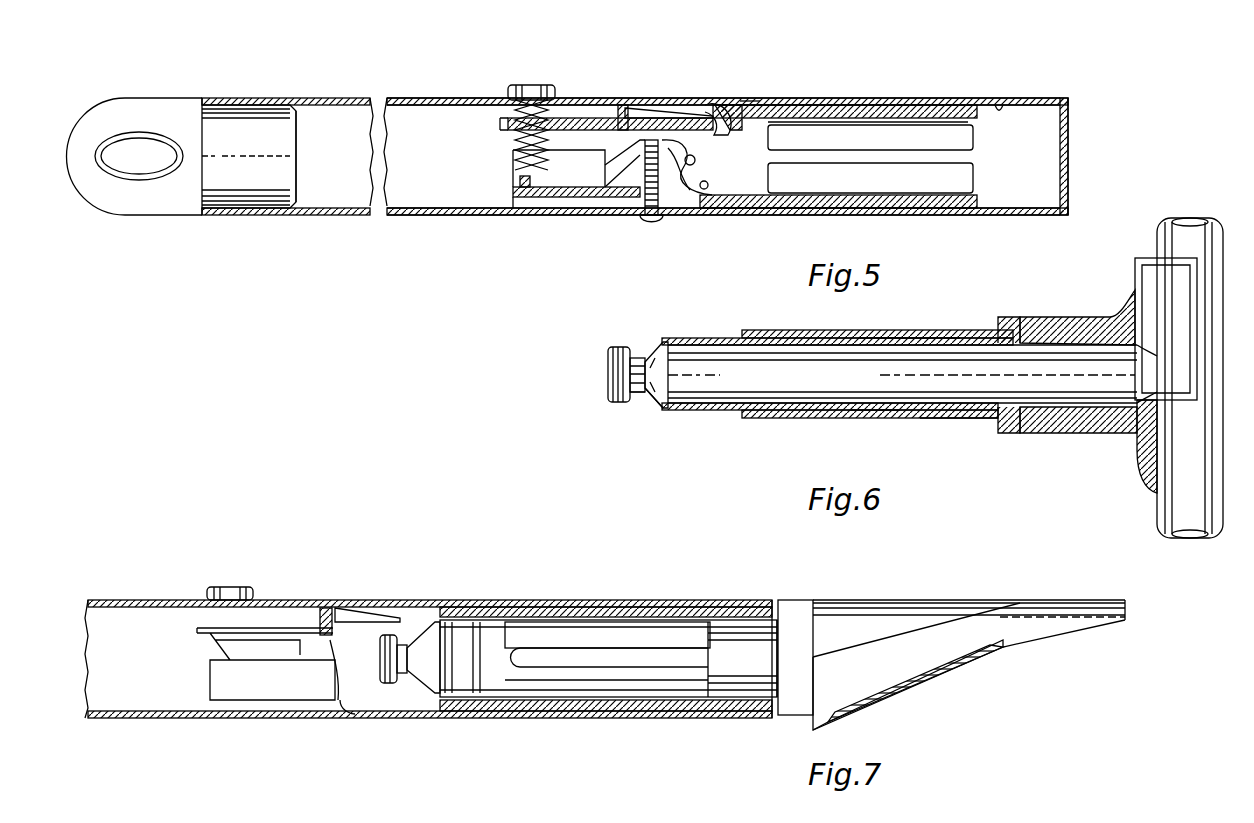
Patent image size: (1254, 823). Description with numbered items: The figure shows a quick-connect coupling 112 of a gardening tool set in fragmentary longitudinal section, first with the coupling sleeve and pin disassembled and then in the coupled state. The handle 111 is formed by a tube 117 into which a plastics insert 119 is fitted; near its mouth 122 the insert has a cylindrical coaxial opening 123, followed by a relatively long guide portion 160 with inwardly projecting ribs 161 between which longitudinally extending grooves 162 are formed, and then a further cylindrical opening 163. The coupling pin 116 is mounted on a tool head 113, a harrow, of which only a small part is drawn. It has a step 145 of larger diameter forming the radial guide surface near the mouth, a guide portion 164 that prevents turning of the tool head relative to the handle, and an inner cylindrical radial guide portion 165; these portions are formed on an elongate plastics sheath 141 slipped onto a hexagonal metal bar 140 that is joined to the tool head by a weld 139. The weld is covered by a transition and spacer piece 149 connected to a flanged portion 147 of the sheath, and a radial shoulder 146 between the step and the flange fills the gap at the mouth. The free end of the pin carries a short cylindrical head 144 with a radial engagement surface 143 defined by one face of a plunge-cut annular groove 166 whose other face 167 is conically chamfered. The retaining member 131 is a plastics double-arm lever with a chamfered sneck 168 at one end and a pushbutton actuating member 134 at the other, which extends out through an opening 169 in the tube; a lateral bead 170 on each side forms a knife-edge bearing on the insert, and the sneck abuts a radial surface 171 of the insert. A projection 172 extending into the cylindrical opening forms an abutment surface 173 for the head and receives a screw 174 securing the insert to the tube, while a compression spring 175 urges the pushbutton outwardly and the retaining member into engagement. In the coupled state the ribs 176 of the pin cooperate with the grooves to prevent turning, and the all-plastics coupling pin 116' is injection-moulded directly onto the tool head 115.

In FIG. 5, the handle 111 is at (575, 90).
In FIG. 5, the quick-connect coupling 112 is at (884, 96).
In FIG. 6, the tool head 113 is at (1186, 520).
In FIG. 7, the tool head 115 is at (860, 606).
In FIG. 6, the coupling pin 116 is at (959, 445).
In FIG. 7, the coupling pin 116' is at (499, 688).
In FIG. 5, the tube 117 is at (780, 100).
In FIG. 5, the plastics insert 119 is at (930, 104).
In FIG. 7, the plastics insert 119 is at (545, 606).
In FIG. 5, the mouth 122 is at (1078, 125).
In FIG. 7, the mouth 122 is at (781, 603).
In FIG. 5, the cylindrical coaxial opening 123 is at (998, 108).
In FIG. 5, the retaining member 131 is at (660, 118).
In FIG. 7, the retaining member 131 is at (352, 612).
In FIG. 5, the actuating member 134 is at (530, 85).
In FIG. 7, the actuating member 134 is at (224, 590).
In FIG. 6, the weld 139 is at (1145, 470).
In FIG. 6, the hexagonal metal bar 140 is at (700, 380).
In FIG. 6, the sheath 141 is at (880, 420).
In FIG. 6, the engagement surface 143 is at (660, 348).
In FIG. 7, the engagement surface 143 is at (415, 690).
In FIG. 6, the head 144 is at (607, 375).
In FIG. 7, the head 144 is at (390, 640).
In FIG. 6, the step 145 is at (940, 336).
In FIG. 7, the step 145 is at (730, 640).
In FIG. 6, the radial shoulder 146 is at (1005, 432).
In FIG. 6, the flanged portion 147 is at (1010, 318).
In FIG. 6, the transition and spacer piece 149 is at (1075, 432).
In FIG. 5, the guide portion 160 is at (840, 120).
In FIG. 5, the ribs 161 is at (772, 185).
In FIG. 5, the grooves 162 is at (948, 165).
In FIG. 5, the cylindrical opening 163 is at (695, 192).
In FIG. 6, the guide portion 164 is at (792, 420).
In FIG. 7, the guide portion 164 is at (598, 636).
In FIG. 6, the radial guide portion 165 is at (720, 412).
In FIG. 7, the radial guide portion 165 is at (462, 636).
In FIG. 6, the annular groove 166 is at (632, 404).
In FIG. 6, the face 167 is at (657, 408).
In FIG. 5, the sneck 168 is at (736, 112).
In FIG. 7, the sneck 168 is at (445, 625).
In FIG. 5, the opening 169 is at (497, 96).
In FIG. 5, the bead 170 is at (623, 108).
In FIG. 5, the radial surface 171 is at (710, 105).
In FIG. 5, the projection 172 is at (600, 190).
In FIG. 5, the abutment surface 173 is at (652, 222).
In FIG. 7, the abutment surface 173 is at (332, 690).
In FIG. 5, the screw 174 is at (630, 197).
In FIG. 5, the compression spring 175 is at (520, 140).
In FIG. 7, the ribs 176 is at (600, 670).